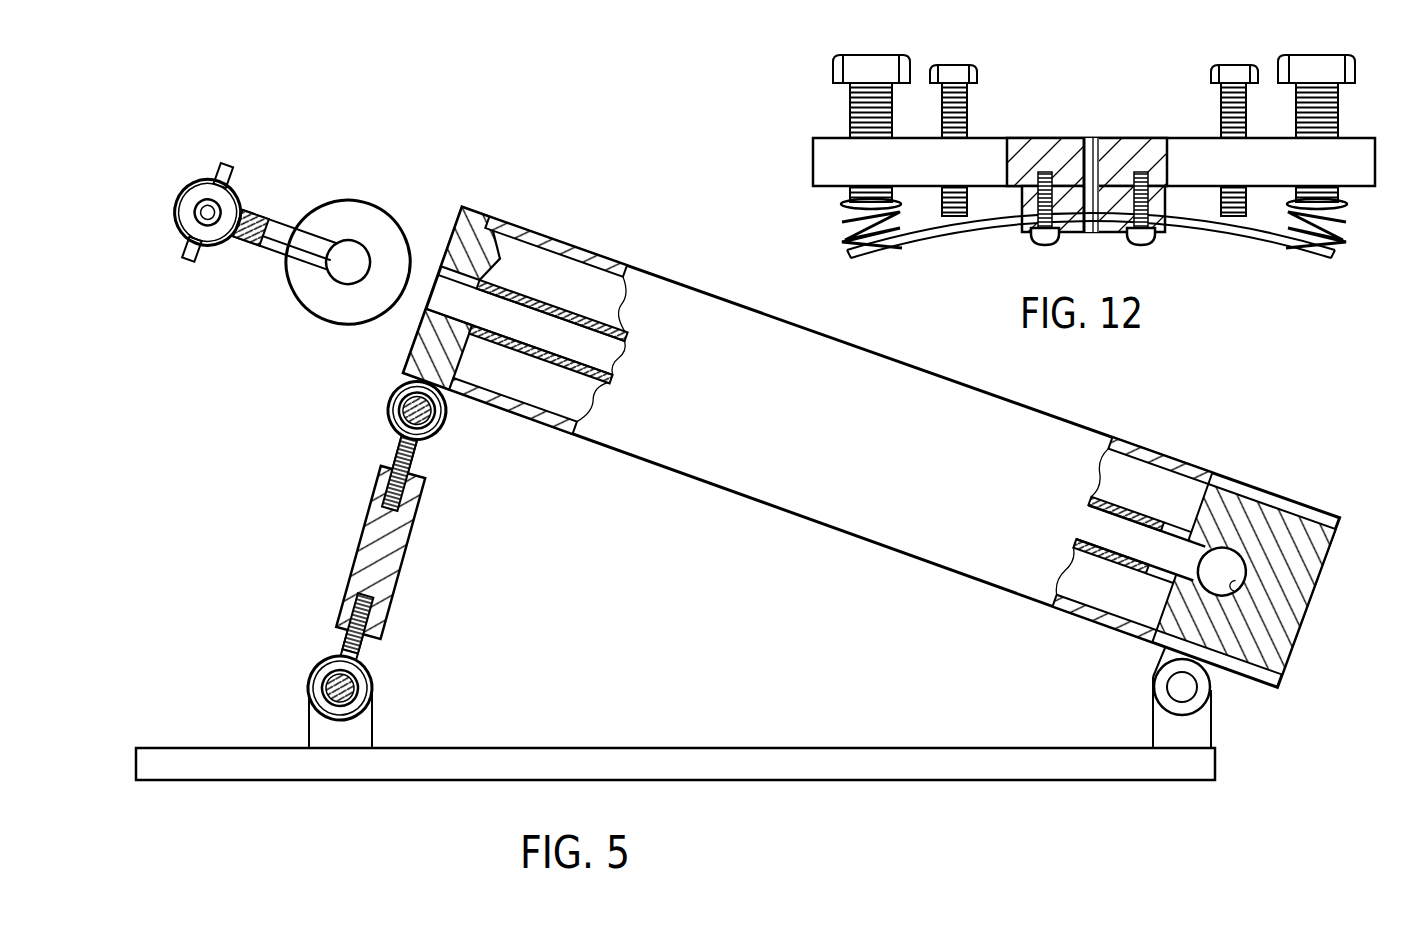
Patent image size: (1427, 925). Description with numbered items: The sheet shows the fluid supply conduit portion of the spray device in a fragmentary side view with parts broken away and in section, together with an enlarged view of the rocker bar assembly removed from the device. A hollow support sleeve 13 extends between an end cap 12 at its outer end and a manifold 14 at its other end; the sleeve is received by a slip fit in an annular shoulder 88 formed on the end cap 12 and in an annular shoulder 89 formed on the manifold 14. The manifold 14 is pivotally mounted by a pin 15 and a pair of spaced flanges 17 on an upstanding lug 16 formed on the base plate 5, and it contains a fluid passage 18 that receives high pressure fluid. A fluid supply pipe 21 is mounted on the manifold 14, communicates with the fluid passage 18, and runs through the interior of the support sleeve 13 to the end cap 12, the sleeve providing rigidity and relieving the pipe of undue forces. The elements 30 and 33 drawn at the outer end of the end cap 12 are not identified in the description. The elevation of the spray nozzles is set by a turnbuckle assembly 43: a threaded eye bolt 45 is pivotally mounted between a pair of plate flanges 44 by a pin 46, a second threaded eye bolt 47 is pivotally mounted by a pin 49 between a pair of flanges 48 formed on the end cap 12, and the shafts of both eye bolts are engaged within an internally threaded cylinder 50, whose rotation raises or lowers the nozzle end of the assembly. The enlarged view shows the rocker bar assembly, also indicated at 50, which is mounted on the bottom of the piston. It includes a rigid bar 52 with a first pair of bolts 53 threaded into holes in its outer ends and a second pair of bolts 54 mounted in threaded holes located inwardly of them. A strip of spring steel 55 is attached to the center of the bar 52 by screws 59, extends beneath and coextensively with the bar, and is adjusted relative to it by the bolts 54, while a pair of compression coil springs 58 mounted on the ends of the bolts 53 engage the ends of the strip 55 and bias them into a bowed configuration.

In FIG. 5, the base plate 5 is at (553, 762).
In FIG. 5, the end cap 12 is at (460, 206).
In FIG. 5, the hollow support sleeve 13 is at (582, 258).
In FIG. 5, the manifold 14 is at (1272, 506).
In FIG. 5, the pin 15 is at (1188, 690).
In FIG. 5, the upstanding lug 16 is at (1163, 725).
In FIG. 5, the spaced flanges 17 is at (1163, 657).
In FIG. 5, the fluid passage 18 is at (1235, 581).
In FIG. 5, the fluid supply pipe 21 is at (572, 318).
In FIG. 5, the hand wheel 30 is at (189, 192).
In FIG. 5, the adjusting rod 33 is at (255, 228).
In FIG. 5, the turnbuckle assembly 43 is at (363, 535).
In FIG. 5, the plate flanges 44 is at (350, 735).
In FIG. 5, the threaded eye bolt 45 is at (338, 660).
In FIG. 5, the pin 46 is at (355, 697).
In FIG. 5, the second threaded eye bolt 47 is at (408, 441).
In FIG. 5, the flanges 48 is at (392, 408).
In FIG. 5, the pin 49 is at (430, 418).
In FIG. 5, the internally threaded cylinder / rocker bar assembly 50 is at (386, 597).
In FIG. 12, the internally threaded cylinder / rocker bar assembly 50 is at (1033, 125).
In FIG. 12, the rigid bar 52 is at (825, 157).
In FIG. 12, the first pair of bolts 53 is at (848, 103).
In FIG. 12, the second pair of bolts 54 is at (967, 107).
In FIG. 12, the strip of spring steel 55 is at (948, 223).
In FIG. 12, the compression coil springs 58 is at (845, 230).
In FIG. 12, the screws 59 is at (1056, 241).
In FIG. 5, the annular shoulder 88 is at (506, 220).
In FIG. 5, the annular shoulder 89 is at (1192, 476).